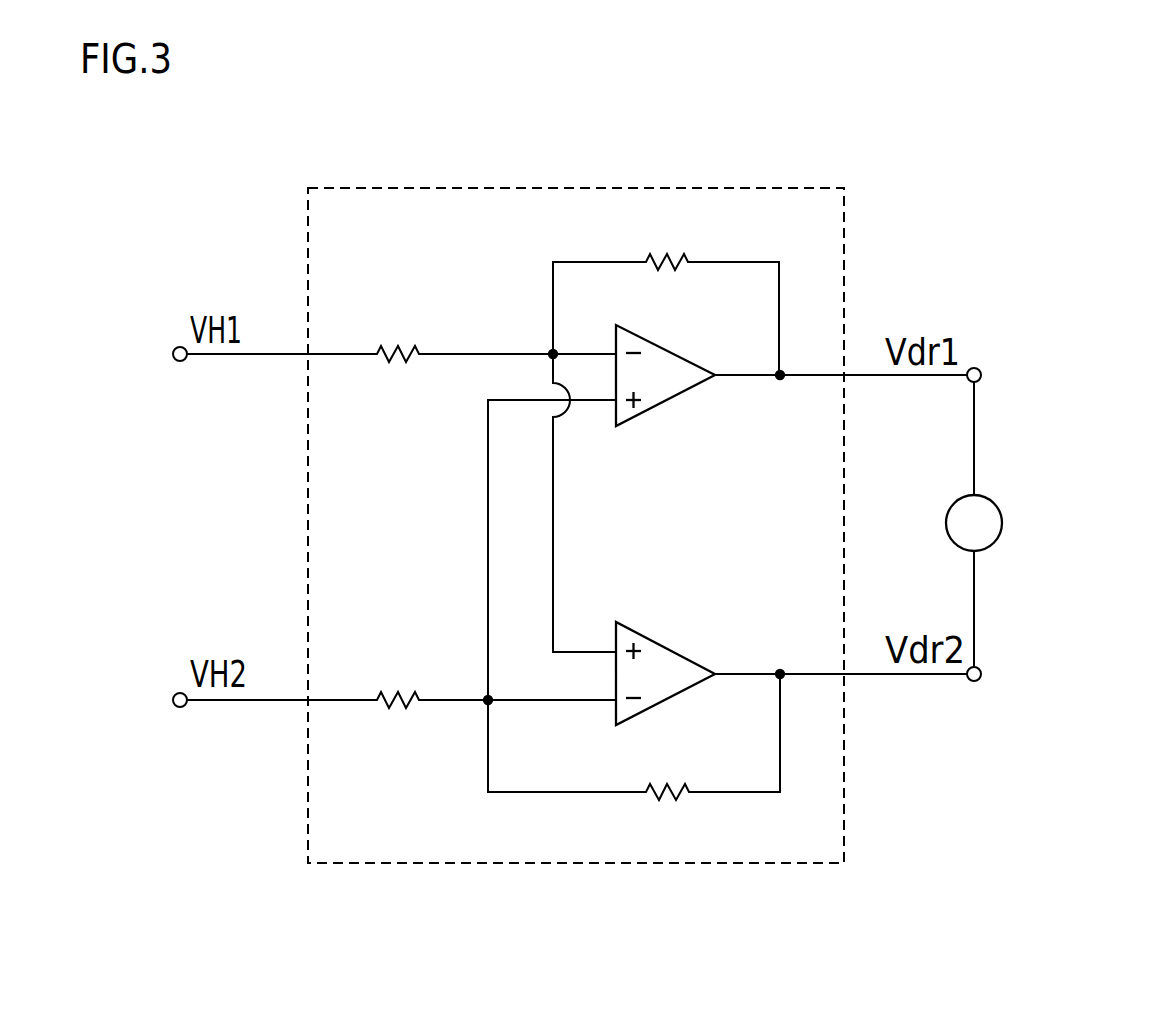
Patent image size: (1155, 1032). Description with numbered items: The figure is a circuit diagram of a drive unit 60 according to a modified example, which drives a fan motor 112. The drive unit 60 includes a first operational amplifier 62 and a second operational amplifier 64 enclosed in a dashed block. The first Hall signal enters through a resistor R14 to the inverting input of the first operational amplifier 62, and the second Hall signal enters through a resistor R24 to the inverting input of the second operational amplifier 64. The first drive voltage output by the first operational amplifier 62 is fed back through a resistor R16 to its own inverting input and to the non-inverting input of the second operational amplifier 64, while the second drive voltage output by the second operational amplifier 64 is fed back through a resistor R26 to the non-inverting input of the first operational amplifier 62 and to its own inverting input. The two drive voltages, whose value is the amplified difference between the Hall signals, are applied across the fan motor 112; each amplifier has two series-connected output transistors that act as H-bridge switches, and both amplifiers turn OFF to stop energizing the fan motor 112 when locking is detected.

The drive unit 60 is at (575, 188).
The first operational amplifier 62 is at (665, 403).
The second operational amplifier 64 is at (667, 647).
The fan motor 112 is at (1002, 520).
The resistor R14 is at (397, 332).
The resistor R16 is at (666, 291).
The resistor R24 is at (398, 677).
The resistor R26 is at (634, 623).